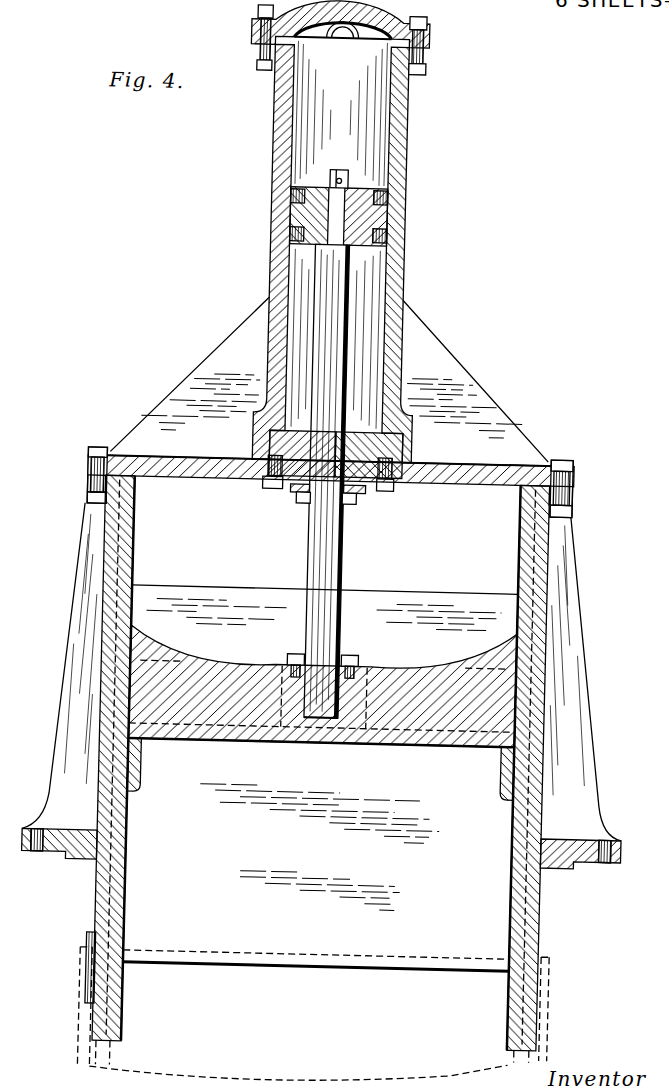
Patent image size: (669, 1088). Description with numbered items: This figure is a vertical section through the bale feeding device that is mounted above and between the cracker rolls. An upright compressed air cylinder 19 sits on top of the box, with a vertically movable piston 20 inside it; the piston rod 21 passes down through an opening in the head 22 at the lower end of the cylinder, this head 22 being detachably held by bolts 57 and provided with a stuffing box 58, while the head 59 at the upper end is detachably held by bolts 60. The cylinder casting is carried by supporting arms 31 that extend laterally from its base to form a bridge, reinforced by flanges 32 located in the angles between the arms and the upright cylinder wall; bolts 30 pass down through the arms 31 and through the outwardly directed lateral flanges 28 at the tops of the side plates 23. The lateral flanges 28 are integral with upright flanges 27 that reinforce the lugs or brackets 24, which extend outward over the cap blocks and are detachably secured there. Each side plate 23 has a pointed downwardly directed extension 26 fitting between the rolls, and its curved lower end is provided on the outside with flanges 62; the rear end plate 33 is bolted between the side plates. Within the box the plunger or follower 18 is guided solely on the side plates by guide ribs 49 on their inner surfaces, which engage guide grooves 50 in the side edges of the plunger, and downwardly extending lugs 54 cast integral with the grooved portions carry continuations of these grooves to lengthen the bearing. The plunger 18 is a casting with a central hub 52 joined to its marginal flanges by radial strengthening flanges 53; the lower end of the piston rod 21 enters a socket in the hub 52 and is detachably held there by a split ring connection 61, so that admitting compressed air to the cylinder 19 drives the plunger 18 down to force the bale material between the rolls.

The plunger or follower 18 is at (435, 744).
The compressed air cylinder 19 is at (388, 226).
The piston 20 is at (289, 201).
The piston rod 21 is at (331, 313).
The head 22 is at (413, 445).
The side plates 23 is at (546, 627).
The lugs or brackets 24 is at (585, 862).
The downwardly directed extension 26 is at (539, 1020).
The upright flanges 27 is at (564, 549).
The lateral flange 28 is at (578, 489).
The bolts 30 is at (91, 456).
The supporting arms 31 is at (190, 484).
The flanges 32 is at (432, 356).
The rear end plate 33 is at (318, 876).
The guide ribs 49 is at (132, 570).
The guide grooves 50 is at (138, 688).
The hub 52 is at (258, 670).
The radial strengthening flanges 53 is at (417, 690).
The downwardly extending lugs 54 is at (153, 783).
The bolts 57 is at (392, 491).
The stuffing box 58 is at (300, 491).
The head 59 is at (247, 27).
The bolts 60 is at (420, 68).
The split ring connection 61 is at (357, 658).
The flanges 62 is at (103, 941).